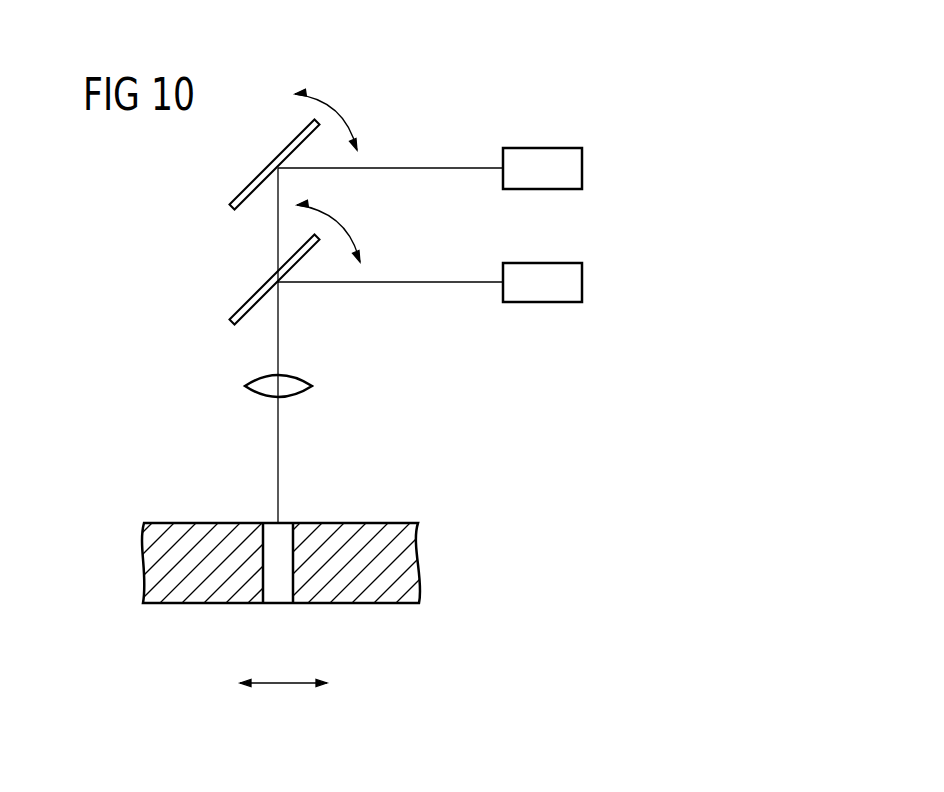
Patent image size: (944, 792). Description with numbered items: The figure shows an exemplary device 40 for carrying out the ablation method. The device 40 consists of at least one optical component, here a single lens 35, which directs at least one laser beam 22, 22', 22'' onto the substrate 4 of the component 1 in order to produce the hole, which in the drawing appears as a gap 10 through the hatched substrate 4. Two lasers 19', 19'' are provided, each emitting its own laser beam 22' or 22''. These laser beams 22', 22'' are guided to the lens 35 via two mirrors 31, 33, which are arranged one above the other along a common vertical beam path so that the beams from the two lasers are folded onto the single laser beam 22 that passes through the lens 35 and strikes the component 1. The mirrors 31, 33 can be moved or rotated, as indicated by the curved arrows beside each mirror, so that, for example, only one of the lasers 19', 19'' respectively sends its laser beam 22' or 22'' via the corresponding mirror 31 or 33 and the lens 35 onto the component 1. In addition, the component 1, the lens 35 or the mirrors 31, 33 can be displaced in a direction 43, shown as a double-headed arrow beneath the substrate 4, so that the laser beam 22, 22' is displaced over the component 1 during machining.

The component 1 is at (124, 593).
The substrate 4 is at (404, 550).
The cutting gap / kerf 10 is at (277, 588).
The laser 19' is at (576, 168).
The laser 19'' is at (578, 282).
The laser beam 22 is at (309, 345).
The laser beam 22' is at (390, 137).
The laser beam 22'' is at (390, 250).
The mirror 31 is at (252, 180).
The mirror 33 is at (252, 294).
The lens 35 is at (305, 380).
The device 40 is at (122, 438).
The direction 43 is at (290, 680).